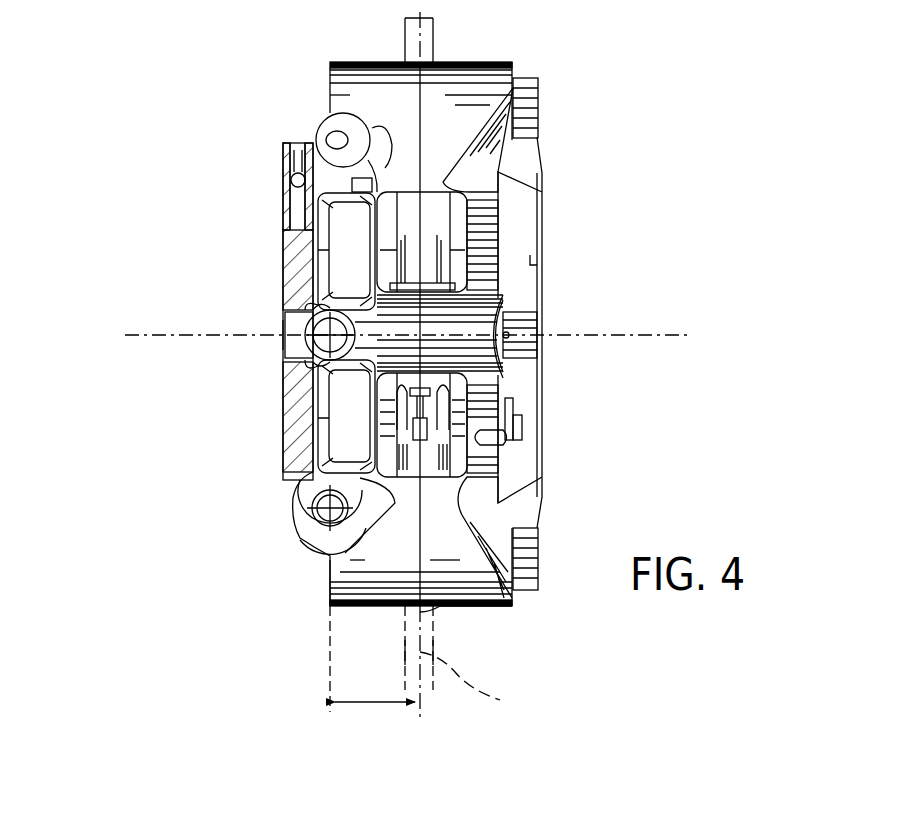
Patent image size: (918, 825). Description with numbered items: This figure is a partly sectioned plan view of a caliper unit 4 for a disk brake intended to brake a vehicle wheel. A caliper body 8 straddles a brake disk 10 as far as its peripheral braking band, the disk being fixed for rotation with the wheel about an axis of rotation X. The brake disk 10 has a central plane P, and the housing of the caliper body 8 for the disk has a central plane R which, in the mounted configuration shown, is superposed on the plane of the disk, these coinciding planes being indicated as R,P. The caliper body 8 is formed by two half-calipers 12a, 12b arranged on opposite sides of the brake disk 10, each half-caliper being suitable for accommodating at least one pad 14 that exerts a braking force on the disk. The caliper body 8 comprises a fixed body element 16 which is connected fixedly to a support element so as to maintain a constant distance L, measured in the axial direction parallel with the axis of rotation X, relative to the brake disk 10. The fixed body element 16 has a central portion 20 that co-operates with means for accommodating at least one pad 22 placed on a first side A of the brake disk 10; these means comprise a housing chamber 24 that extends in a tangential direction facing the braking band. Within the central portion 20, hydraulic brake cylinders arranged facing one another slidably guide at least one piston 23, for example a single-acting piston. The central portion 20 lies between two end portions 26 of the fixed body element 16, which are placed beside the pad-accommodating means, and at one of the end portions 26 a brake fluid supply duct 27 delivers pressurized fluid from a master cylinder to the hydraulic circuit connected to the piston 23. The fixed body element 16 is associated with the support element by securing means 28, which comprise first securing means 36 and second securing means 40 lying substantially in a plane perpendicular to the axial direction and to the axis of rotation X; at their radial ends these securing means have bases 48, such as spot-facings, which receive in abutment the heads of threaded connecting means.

The caliper unit 4 is at (600, 88).
The caliper body 8 is at (460, 614).
The brake disk 10 is at (433, 42).
The half-caliper 12a is at (330, 612).
The half-caliper 12b is at (500, 600).
The pad 14 is at (440, 250).
The fixed body element 16 is at (248, 373).
The central portion 20 is at (280, 340).
The pad 22 is at (530, 315).
The piston 23 is at (318, 235).
The housing chamber 24 is at (425, 215).
The end portions 26 is at (326, 88).
The brake fluid supply duct 27 is at (325, 135).
The securing means 28 is at (282, 302).
The first securing means 36 is at (286, 500).
The second securing means 40 is at (280, 320).
The bases 48 is at (290, 362).
The first side A is at (405, 652).
The constant distance L is at (375, 688).
The axis of rotation X is at (140, 335).
The central planes R,P is at (510, 705).